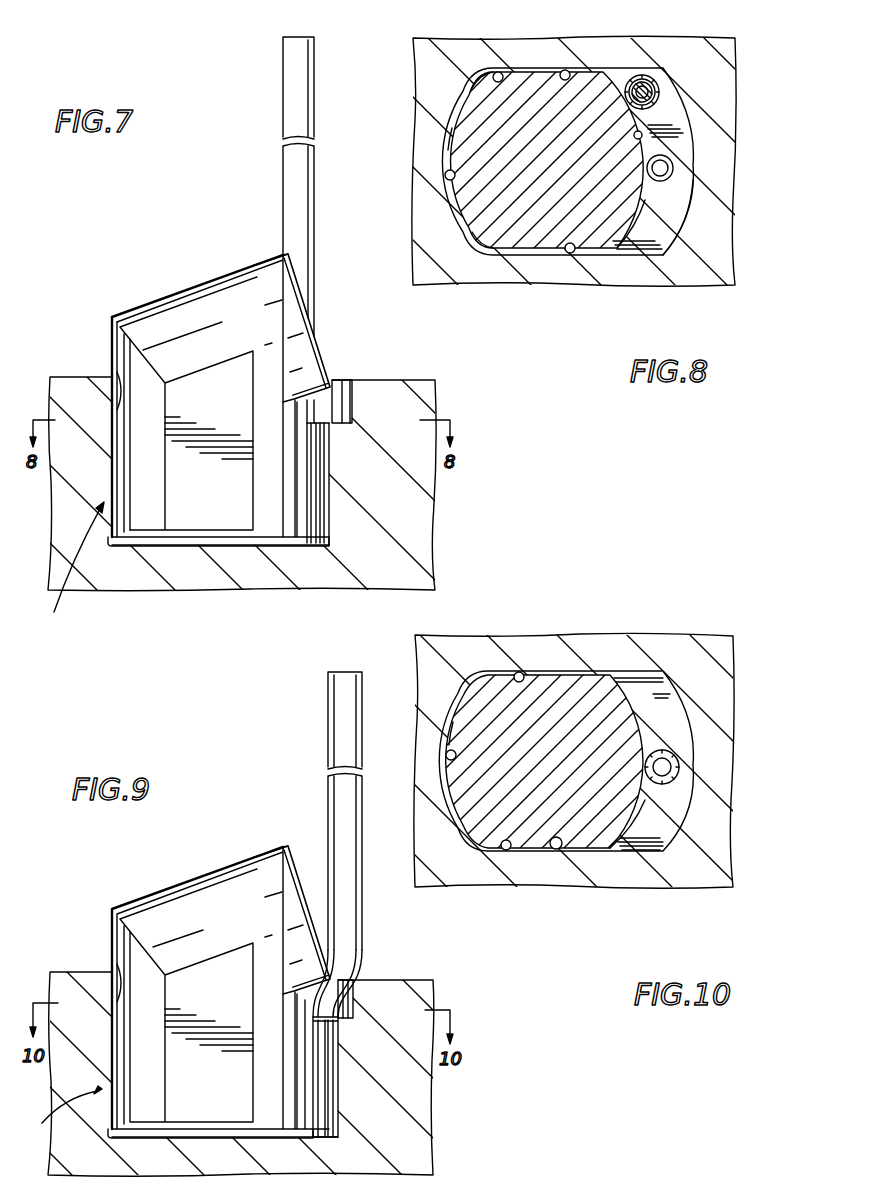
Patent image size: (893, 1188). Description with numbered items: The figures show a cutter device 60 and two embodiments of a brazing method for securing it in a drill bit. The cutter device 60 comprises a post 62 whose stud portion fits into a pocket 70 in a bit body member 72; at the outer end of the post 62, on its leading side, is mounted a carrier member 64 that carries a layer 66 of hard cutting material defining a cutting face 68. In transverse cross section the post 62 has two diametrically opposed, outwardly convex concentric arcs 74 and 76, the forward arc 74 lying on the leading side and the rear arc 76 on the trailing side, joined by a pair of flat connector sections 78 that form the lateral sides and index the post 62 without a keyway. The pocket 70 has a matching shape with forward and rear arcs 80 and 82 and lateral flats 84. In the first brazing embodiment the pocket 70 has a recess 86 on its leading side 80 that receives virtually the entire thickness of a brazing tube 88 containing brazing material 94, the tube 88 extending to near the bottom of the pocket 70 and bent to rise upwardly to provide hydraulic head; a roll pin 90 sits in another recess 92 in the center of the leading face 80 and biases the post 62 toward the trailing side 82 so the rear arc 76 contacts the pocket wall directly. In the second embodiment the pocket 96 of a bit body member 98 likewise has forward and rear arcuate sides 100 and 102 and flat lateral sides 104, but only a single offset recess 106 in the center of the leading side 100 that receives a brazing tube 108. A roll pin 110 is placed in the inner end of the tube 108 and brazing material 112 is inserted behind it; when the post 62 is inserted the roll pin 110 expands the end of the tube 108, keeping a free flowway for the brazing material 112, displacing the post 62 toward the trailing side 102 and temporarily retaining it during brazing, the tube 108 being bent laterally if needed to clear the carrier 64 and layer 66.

In FIG. 7, the cutter device 60 is at (67, 571).
In FIG. 9, the cutter device 60 is at (60, 1114).
In FIG. 7, the post 62 is at (185, 312).
In FIG. 8, the post 62 is at (540, 235).
In FIG. 9, the post 62 is at (183, 900).
In FIG. 10, the post 62 is at (613, 713).
In FIG. 7, the carrier member 64 is at (278, 258).
In FIG. 9, the carrier member 64 is at (282, 850).
In FIG. 7, the layer of hard cutting material 66 is at (322, 368).
In FIG. 9, the layer of hard cutting material 66 is at (303, 887).
In FIG. 7, the cutting face 68 is at (313, 340).
In FIG. 7, the pocket 70 is at (117, 385).
In FIG. 8, the pocket 70 is at (503, 72).
In FIG. 7, the bit body member 72 is at (415, 534).
In FIG. 8, the bit body member 72 is at (575, 288).
In FIG. 7, the forward arc 74 is at (303, 503).
In FIG. 8, the forward arc 74 is at (640, 206).
In FIG. 7, the rear arc 76 is at (130, 452).
In FIG. 8, the rear arc 76 is at (450, 160).
In FIG. 8, the connector sections 78 is at (510, 253).
In FIG. 8, the forward arc of pocket 80 is at (653, 133).
In FIG. 8, the rear arc of pocket 82 is at (448, 187).
In FIG. 8, the lateral flats of pocket 84 is at (571, 253).
In FIG. 8, the recess 86 is at (663, 68).
In FIG. 7, the brazing tube 88 is at (283, 101).
In FIG. 8, the brazing tube 88 is at (657, 103).
In FIG. 8, the roll pin 90 is at (670, 173).
In FIG. 7, the recess for roll pin 92 is at (327, 471).
In FIG. 8, the recess for roll pin 92 is at (675, 182).
In FIG. 8, the brazing material 94 is at (630, 65).
In FIG. 9, the pocket 96 is at (200, 1125).
In FIG. 10, the pocket 96 is at (558, 850).
In FIG. 9, the bit body member 98 is at (413, 1152).
In FIG. 10, the bit body member 98 is at (702, 873).
In FIG. 10, the forward arcuate side 100 is at (647, 735).
In FIG. 10, the rear arcuate side 102 is at (447, 757).
In FIG. 10, the flat lateral sides 104 is at (507, 850).
In FIG. 10, the offset recess 106 is at (679, 764).
In FIG. 9, the brazing tube 108 is at (328, 732).
In FIG. 10, the brazing tube 108 is at (668, 757).
In FIG. 9, the roll pin 110 is at (326, 1076).
In FIG. 10, the roll pin 110 is at (657, 784).
In FIG. 9, the brazing material 112 is at (335, 973).